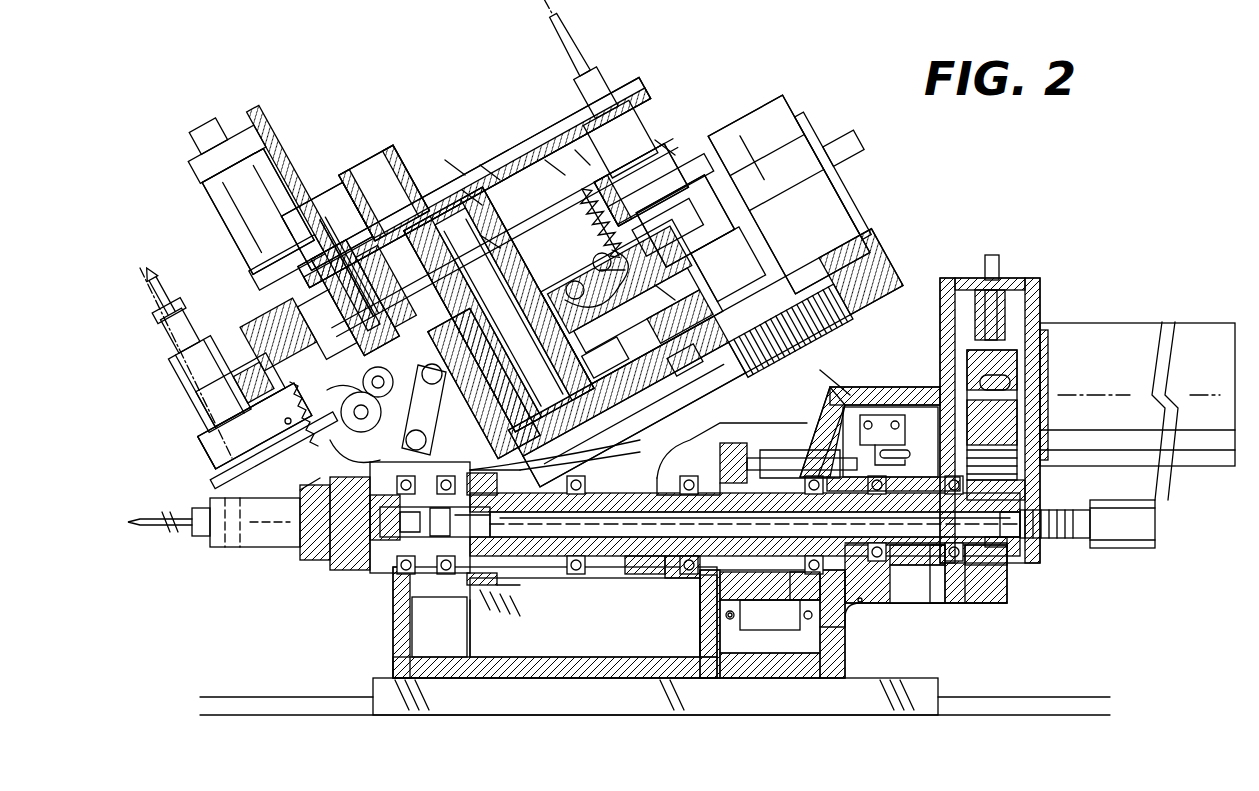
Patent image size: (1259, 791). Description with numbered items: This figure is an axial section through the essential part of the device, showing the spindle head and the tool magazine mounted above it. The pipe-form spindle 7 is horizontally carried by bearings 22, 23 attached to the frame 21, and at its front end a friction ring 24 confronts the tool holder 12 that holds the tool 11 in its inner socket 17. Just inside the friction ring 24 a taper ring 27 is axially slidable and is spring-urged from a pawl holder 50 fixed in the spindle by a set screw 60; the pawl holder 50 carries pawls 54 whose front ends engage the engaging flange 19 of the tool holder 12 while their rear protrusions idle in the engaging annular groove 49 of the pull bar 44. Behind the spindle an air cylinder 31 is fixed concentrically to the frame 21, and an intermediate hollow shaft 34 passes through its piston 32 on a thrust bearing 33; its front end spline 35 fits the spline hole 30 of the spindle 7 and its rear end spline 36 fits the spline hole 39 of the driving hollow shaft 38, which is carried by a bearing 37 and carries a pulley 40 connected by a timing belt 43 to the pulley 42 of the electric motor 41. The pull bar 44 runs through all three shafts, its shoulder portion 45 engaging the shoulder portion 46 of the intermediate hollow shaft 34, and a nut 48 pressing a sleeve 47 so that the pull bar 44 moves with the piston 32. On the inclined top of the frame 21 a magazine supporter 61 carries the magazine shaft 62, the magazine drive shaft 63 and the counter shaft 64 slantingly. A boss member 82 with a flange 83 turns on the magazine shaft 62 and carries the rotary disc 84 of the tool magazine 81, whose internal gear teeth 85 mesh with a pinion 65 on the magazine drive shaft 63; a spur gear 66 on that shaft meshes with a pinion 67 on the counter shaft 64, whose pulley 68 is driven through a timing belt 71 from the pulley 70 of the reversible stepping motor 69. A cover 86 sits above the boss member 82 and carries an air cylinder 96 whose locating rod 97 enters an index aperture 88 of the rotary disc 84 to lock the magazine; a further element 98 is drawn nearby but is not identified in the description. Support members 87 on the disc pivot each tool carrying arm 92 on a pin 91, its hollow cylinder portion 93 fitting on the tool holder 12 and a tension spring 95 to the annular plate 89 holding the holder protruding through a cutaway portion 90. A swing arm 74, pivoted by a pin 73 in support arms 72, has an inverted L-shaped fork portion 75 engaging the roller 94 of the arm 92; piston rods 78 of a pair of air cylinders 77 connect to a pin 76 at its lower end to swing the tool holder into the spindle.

The spindle 7 is at (578, 545).
The tool 11 is at (572, 38).
The tool holder 12 is at (186, 405).
The inner socket 17 is at (308, 552).
The engaging flange 19 is at (430, 620).
The frame 21 is at (718, 680).
The bearing 22 is at (405, 572).
The bearing 23 is at (675, 578).
The friction ring 24 is at (385, 578).
The taper ring 27 is at (395, 565).
The spline hole 30 is at (695, 580).
The air cylinder 31 is at (768, 440).
The piston 32 is at (800, 600).
The thrust bearing 33 is at (731, 618).
The intermediate hollow shaft 34 is at (770, 605).
The front end spline 35 is at (640, 575).
The rear end spline 36 is at (912, 605).
The bearing 37 is at (975, 580).
The driving hollow shaft 38 is at (1012, 540).
The spline hole 39 is at (940, 570).
The pulley 40 is at (990, 565).
The electric motor 41 is at (1098, 330).
The pulley 42 is at (965, 378).
The timing belt 43 is at (1000, 468).
The pull bar 44 is at (597, 560).
The shoulder portion 45 is at (838, 620).
The shoulder portion 46 is at (902, 565).
The sleeve 47 is at (1020, 556).
The nut 48 is at (1055, 538).
The engaging annular groove 49 is at (515, 560).
The pawl holder 50 is at (500, 605).
The pawl 54 is at (472, 584).
The set screw 60 is at (522, 590).
The magazine supporter 61 is at (588, 448).
The magazine shaft 62 is at (470, 200).
The magazine drive shaft 63 is at (638, 445).
The counter shaft 64 is at (725, 445).
The pinion 65 is at (566, 298).
The spur gear 66 is at (600, 360).
The pinion 67 is at (690, 360).
The pulley 68 is at (732, 368).
The stepping motor 69 is at (848, 200).
The pulley 70 is at (882, 322).
The timing belt 71 is at (832, 382).
The support arms 72 is at (442, 348).
The pin 73 is at (470, 380).
The swing arm 74 is at (545, 452).
The fork portion 75 is at (432, 320).
The pin 76 is at (341, 430).
The air cylinders 77 is at (666, 296).
The piston rods 78 is at (470, 412).
The tool magazine 81 is at (490, 170).
The boss member 82 is at (431, 214).
The flange 83 is at (490, 240).
The rotary disc 84 is at (553, 160).
The internal gear teeth 85 is at (347, 206).
The cover 86 is at (455, 166).
The support members 87 is at (575, 235).
The index aperture 88 is at (560, 176).
The annular plate 89 is at (580, 155).
The cutaway portions 90 is at (630, 166).
The pin 91 is at (615, 268).
The tool carrying arm 92 is at (302, 490).
The hollow cylinder portion 93 is at (340, 570).
The roller 94 is at (356, 320).
The tension spring 95 is at (665, 152).
The air cylinder 96 is at (218, 226).
The locating rod 97 is at (262, 281).
The block 98 is at (735, 192).